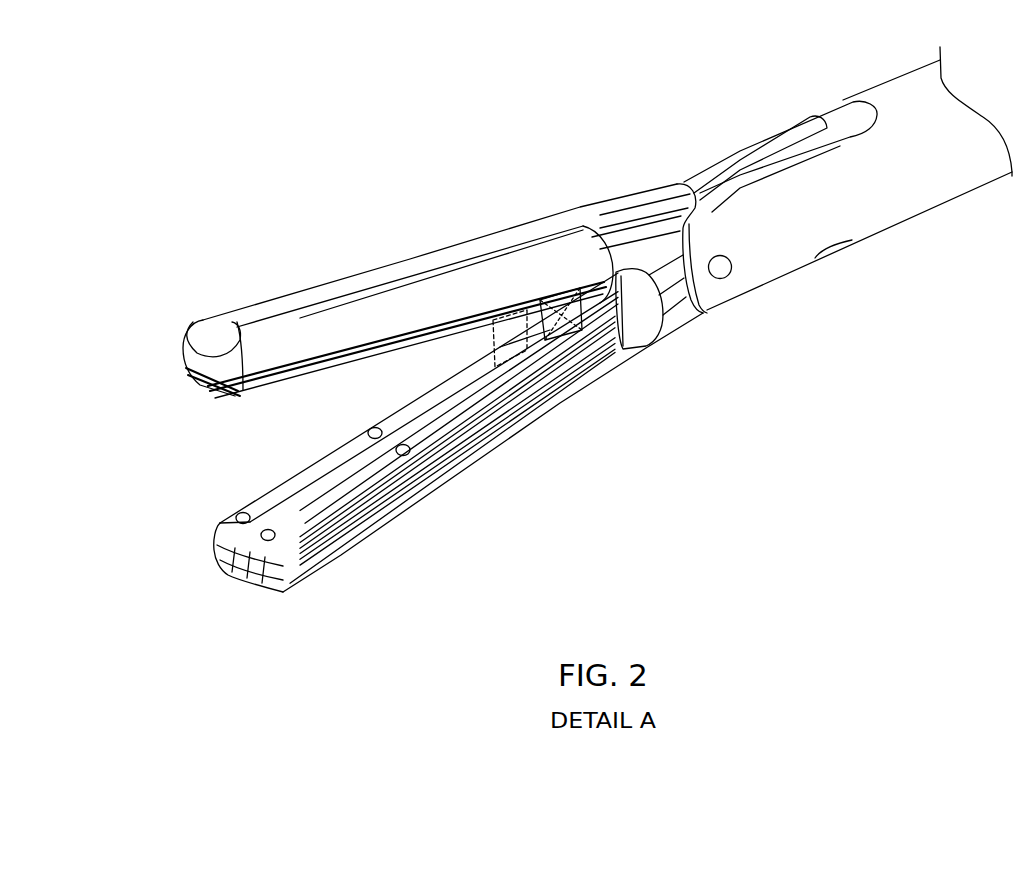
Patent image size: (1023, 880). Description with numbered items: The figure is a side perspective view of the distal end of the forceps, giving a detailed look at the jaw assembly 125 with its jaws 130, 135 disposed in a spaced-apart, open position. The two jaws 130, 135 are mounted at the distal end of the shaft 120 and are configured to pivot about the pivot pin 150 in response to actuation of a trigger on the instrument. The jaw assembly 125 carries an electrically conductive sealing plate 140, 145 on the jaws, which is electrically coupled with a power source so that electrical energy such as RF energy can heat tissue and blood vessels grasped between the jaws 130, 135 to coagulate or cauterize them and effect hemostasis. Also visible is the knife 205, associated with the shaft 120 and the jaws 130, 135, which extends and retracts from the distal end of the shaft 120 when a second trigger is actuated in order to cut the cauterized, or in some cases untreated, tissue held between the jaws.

The shaft 120 is at (933, 157).
The jaw assembly 125 is at (548, 150).
The jaw 130 is at (533, 447).
The jaw 135 is at (392, 245).
The electrically conductive sealing plate 140 is at (245, 534).
The electrically conductive sealing plate 145 is at (229, 391).
The pivot pin 150 is at (717, 266).
The knife 205 is at (517, 333).